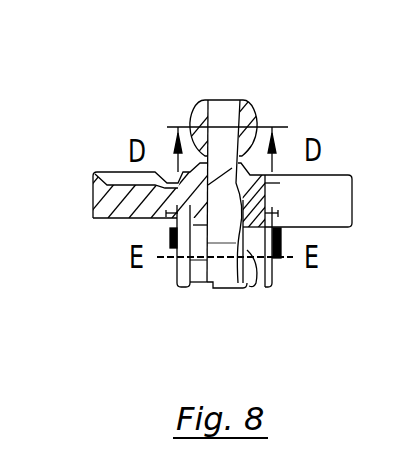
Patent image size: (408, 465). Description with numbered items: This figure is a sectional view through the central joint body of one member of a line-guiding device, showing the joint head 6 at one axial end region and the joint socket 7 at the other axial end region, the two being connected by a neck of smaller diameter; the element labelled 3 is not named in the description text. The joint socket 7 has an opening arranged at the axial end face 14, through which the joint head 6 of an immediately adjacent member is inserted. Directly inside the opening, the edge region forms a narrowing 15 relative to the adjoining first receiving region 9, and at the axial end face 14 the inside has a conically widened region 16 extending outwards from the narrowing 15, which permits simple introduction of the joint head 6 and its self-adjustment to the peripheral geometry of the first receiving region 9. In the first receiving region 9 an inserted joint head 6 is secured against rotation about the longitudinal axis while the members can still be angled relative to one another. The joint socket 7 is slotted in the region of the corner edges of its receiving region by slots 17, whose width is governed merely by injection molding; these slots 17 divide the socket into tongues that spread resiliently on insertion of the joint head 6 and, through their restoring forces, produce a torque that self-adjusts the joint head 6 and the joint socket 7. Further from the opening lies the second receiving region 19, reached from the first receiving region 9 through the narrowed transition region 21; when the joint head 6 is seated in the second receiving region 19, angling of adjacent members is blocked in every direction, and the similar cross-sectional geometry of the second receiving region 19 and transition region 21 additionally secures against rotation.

The housing part 3 is at (95, 182).
The joint head 6 is at (202, 108).
The joint socket 7 is at (223, 243).
The first receiving region 9 is at (185, 260).
The axial end face 14 is at (228, 289).
The narrowing 15 is at (252, 278).
The conically widened region 16 is at (190, 288).
The slots 17 is at (248, 286).
The second receiving region 19 is at (207, 228).
The narrowed transition region 21 is at (282, 245).